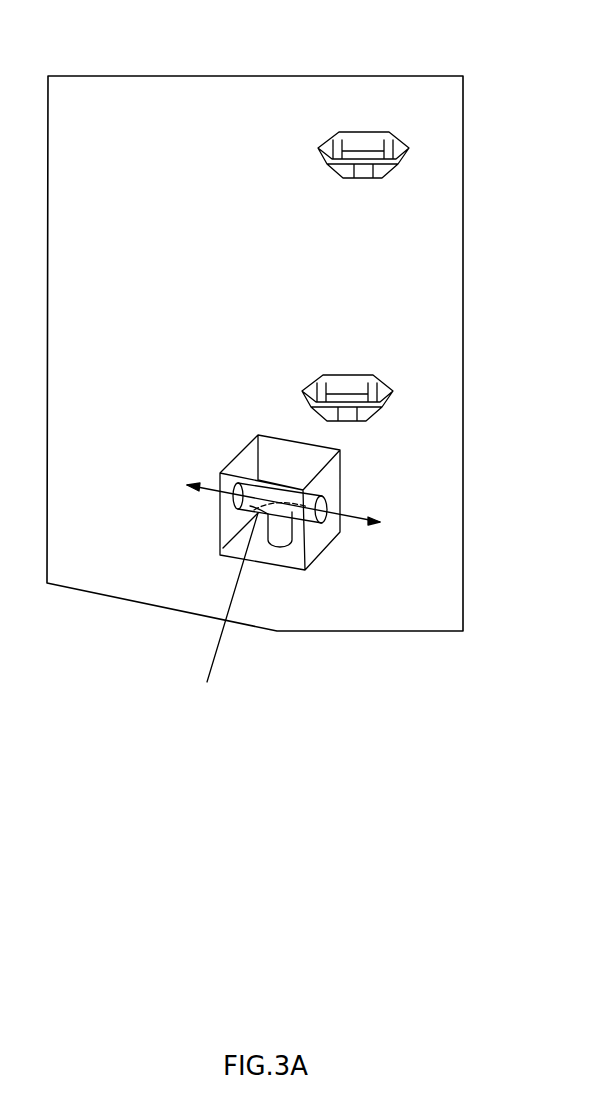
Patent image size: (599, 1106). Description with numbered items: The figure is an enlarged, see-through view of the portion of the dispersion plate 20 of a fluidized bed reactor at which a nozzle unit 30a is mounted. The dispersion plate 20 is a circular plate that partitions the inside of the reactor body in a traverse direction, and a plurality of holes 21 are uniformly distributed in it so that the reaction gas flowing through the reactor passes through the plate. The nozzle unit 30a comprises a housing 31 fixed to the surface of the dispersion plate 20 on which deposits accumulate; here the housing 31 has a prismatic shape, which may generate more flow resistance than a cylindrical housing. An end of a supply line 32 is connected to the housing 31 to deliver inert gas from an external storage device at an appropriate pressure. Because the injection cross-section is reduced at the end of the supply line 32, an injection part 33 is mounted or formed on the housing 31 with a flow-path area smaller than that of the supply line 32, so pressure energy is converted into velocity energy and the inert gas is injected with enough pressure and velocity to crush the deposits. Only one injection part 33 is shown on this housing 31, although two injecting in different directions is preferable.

The dispersion plate 20 is at (412, 242).
The holes 21 is at (363, 140).
The nozzle unit 30a is at (355, 460).
The housing 31 is at (238, 452).
The supply line 32 is at (297, 524).
The injection part 33 is at (330, 499).